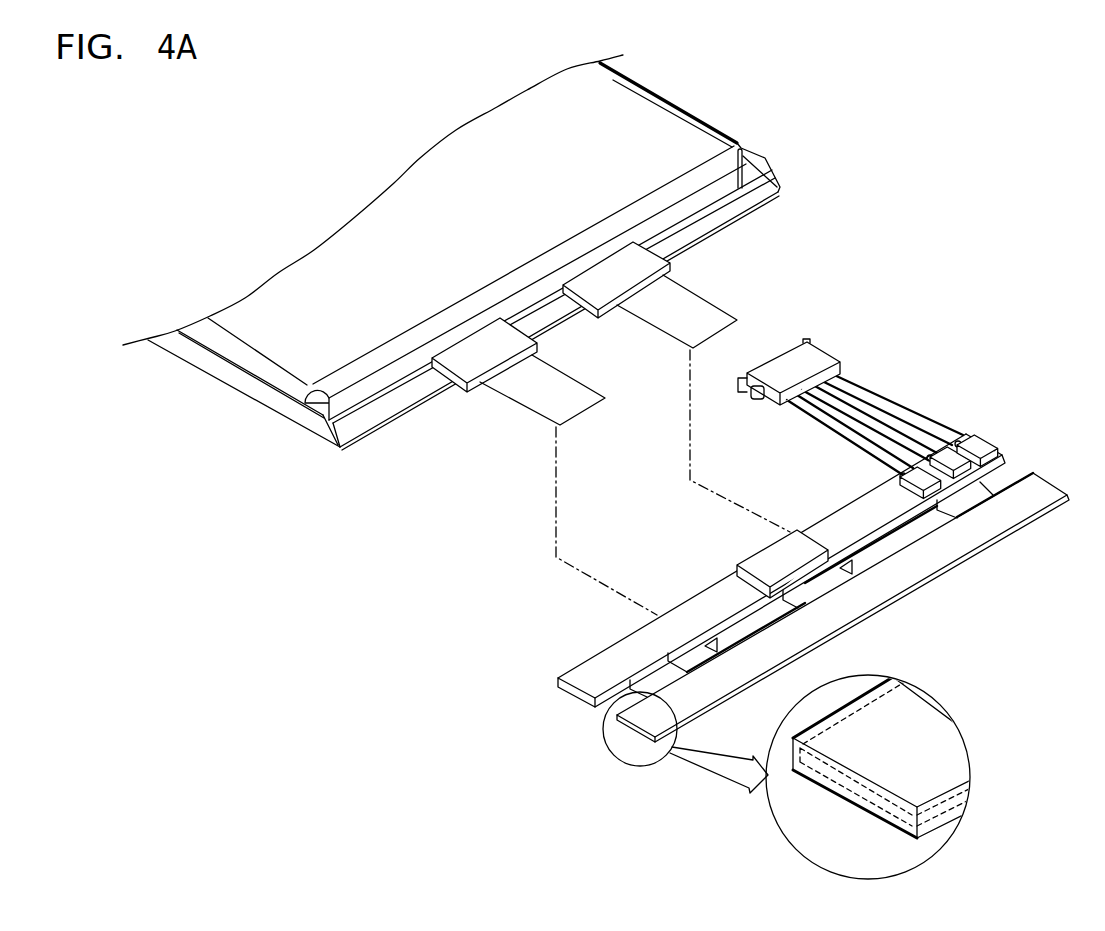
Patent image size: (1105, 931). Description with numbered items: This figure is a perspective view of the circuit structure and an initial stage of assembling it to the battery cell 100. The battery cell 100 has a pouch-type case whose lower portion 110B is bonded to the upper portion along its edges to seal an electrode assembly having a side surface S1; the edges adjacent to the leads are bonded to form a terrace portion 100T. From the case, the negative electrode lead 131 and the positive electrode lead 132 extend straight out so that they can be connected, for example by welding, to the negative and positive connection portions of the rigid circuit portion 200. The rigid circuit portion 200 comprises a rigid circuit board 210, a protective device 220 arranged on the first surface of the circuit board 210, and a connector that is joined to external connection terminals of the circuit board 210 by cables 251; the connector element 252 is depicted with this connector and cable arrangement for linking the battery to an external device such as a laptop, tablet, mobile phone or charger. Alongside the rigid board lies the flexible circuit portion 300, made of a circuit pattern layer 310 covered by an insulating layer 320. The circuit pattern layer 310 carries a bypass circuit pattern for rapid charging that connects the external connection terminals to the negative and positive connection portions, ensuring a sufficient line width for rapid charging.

The battery cell 100 is at (233, 392).
The lower portion of the pouch-type case 110B is at (655, 120).
The side surface S1 is at (723, 174).
The terrace portion 100T is at (733, 203).
The negative electrode lead 131 is at (693, 302).
The positive electrode lead 132 is at (515, 395).
The rigid circuit portion 200 is at (740, 503).
The rigid circuit board 210 is at (1003, 455).
The protective device 220 is at (767, 558).
The cables 251 is at (923, 418).
The connector 252 is at (813, 358).
The flexible circuit portion 300 is at (849, 653).
The circuit pattern layer 310 is at (843, 783).
The insulating layer 320 is at (858, 807).